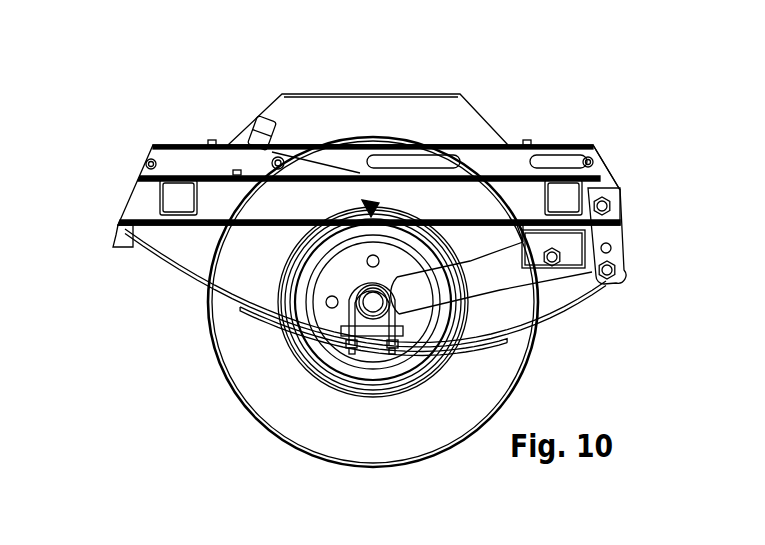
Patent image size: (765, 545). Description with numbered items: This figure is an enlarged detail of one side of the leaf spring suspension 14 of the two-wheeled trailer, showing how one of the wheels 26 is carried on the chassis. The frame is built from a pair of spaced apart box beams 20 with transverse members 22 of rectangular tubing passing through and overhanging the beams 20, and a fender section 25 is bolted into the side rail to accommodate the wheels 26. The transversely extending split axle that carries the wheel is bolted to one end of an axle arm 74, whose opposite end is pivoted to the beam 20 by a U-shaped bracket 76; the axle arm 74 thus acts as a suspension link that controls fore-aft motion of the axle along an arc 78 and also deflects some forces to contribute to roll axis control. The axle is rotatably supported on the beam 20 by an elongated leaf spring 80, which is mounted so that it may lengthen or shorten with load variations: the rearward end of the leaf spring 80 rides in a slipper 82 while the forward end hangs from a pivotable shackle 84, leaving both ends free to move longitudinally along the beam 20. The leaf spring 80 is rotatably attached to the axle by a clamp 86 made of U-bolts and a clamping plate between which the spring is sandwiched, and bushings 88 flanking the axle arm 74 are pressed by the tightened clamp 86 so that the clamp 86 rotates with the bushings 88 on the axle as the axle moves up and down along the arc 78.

The leaf spring suspension 14 is at (170, 343).
The box beams 20 is at (323, 182).
The transverse members 22 is at (658, 150).
The fender section 25 is at (368, 98).
The wheels 26 is at (373, 341).
The axle arm 74 is at (523, 306).
The U-shaped bracket 76 is at (626, 234).
The arc 78 is at (375, 358).
The leaf spring 80 is at (365, 334).
The slipper 82 is at (112, 253).
The pivotable shackle 84 is at (662, 247).
The clamp 86 is at (290, 380).
The bushings 88 is at (326, 422).